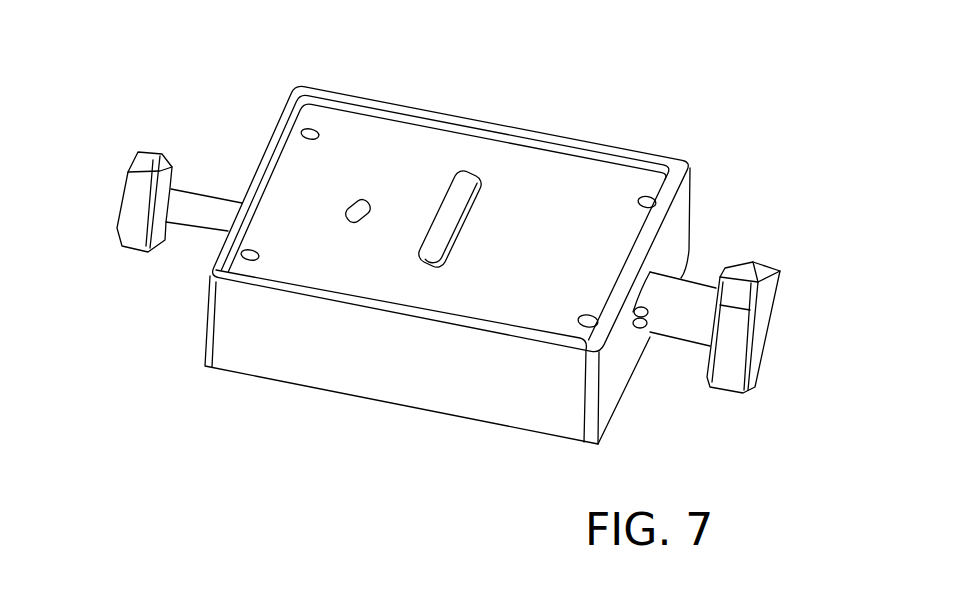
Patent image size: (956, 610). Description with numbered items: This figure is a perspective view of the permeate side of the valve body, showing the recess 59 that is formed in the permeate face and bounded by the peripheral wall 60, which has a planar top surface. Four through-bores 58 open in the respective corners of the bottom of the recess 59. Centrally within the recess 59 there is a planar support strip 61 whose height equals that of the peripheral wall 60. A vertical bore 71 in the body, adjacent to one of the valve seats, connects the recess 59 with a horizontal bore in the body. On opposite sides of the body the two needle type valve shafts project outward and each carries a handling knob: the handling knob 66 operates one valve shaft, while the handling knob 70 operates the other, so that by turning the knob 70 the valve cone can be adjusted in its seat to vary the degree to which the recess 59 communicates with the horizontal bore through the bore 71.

The through-bores 58 is at (308, 130).
The recess 59 is at (545, 193).
The peripheral wall 60 is at (363, 298).
The planar support strip 61 is at (455, 193).
The handling knob 66 is at (740, 271).
The handling knob 70 is at (147, 185).
The vertical bore 71 is at (362, 203).